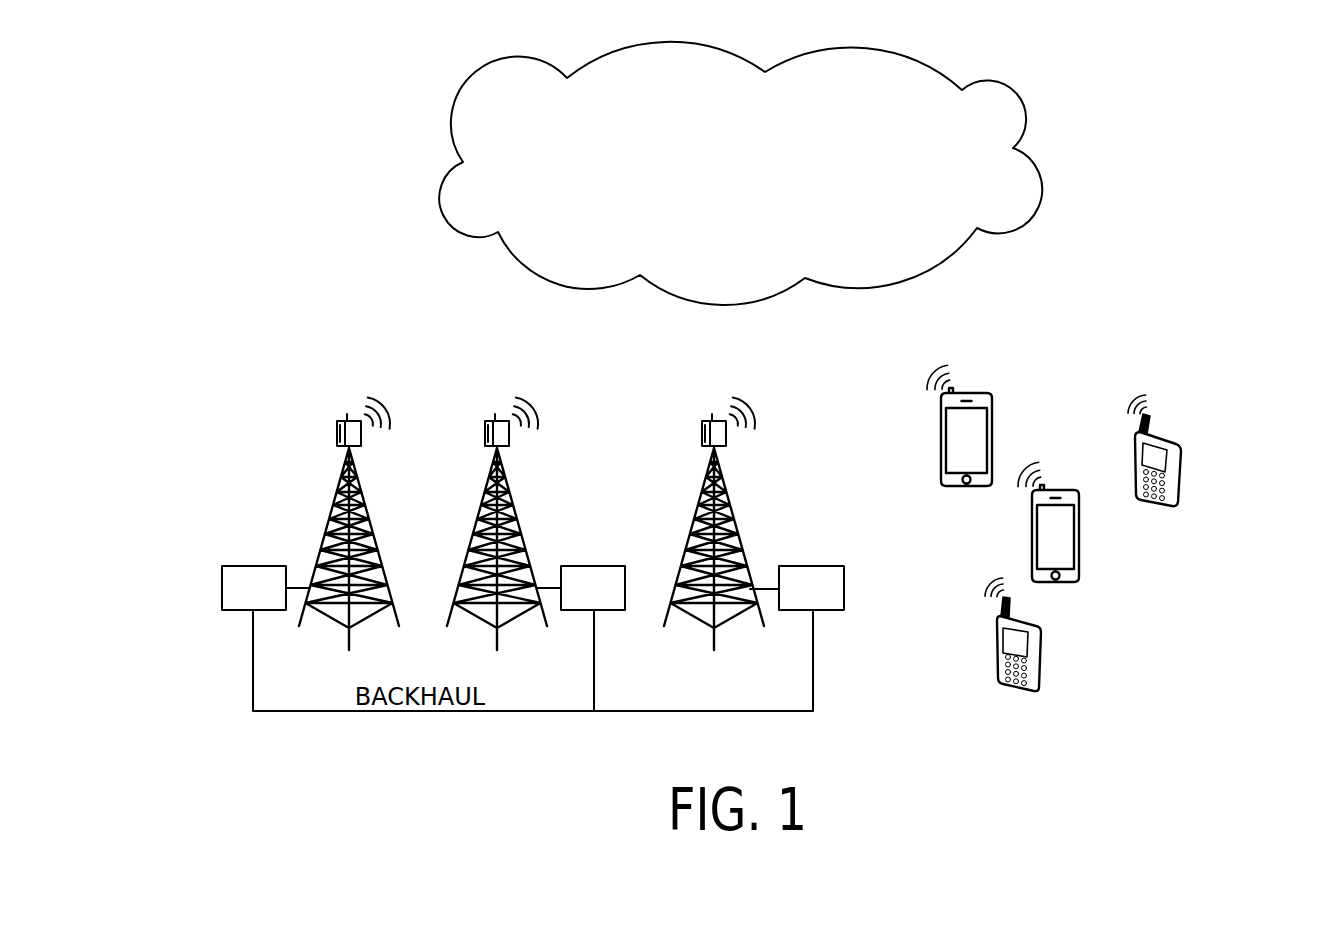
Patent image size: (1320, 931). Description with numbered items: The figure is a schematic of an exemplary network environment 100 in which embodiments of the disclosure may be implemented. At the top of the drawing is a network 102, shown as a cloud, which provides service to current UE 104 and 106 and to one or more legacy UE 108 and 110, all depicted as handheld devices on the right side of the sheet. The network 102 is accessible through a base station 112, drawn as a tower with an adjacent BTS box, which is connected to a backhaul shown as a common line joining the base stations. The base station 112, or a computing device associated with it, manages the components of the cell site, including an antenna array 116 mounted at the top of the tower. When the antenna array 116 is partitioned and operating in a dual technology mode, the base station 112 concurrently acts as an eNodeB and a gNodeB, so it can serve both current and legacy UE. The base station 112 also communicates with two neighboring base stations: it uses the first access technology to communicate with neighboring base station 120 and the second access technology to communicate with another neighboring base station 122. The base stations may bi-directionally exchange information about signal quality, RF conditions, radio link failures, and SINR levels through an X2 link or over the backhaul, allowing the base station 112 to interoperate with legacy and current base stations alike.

The network environment 100 is at (233, 128).
The network 102 is at (759, 185).
The current UE 104 is at (992, 432).
The current UE 106 is at (1080, 528).
The legacy UE 108 is at (1042, 648).
The legacy UE 110 is at (1182, 472).
The base station 112 is at (809, 566).
The antenna array 116 is at (727, 436).
The neighboring base station 120 is at (590, 566).
The neighboring base station 122 is at (253, 566).